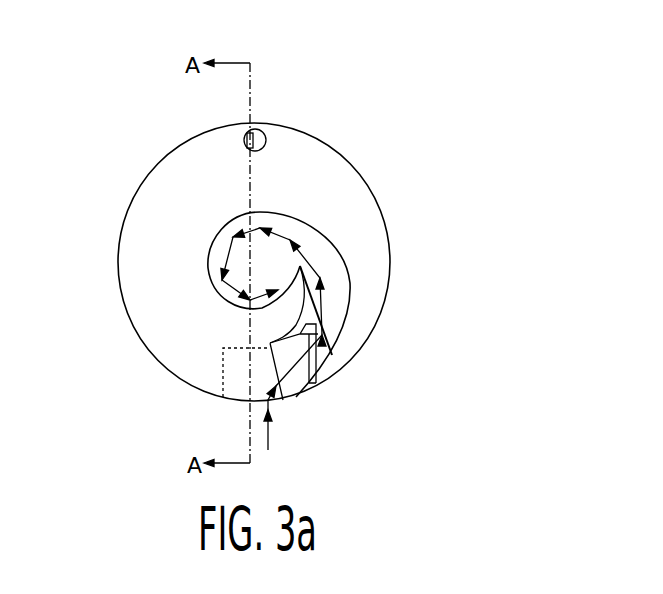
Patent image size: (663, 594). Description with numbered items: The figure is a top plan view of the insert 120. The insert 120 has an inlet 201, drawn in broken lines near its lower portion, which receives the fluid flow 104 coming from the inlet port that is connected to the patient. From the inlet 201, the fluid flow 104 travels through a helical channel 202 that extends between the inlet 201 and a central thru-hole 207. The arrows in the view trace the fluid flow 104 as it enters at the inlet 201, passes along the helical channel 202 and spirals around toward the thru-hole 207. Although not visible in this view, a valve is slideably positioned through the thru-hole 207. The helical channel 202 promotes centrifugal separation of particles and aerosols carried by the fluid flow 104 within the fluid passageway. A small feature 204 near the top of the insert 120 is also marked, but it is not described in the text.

The insert 120 is at (68, 268).
The thru-hole 207 is at (212, 238).
The helical channel 202 is at (325, 268).
The inlet 201 is at (223, 372).
The fluid flow 104 is at (288, 233).
The pin 204 is at (267, 140).